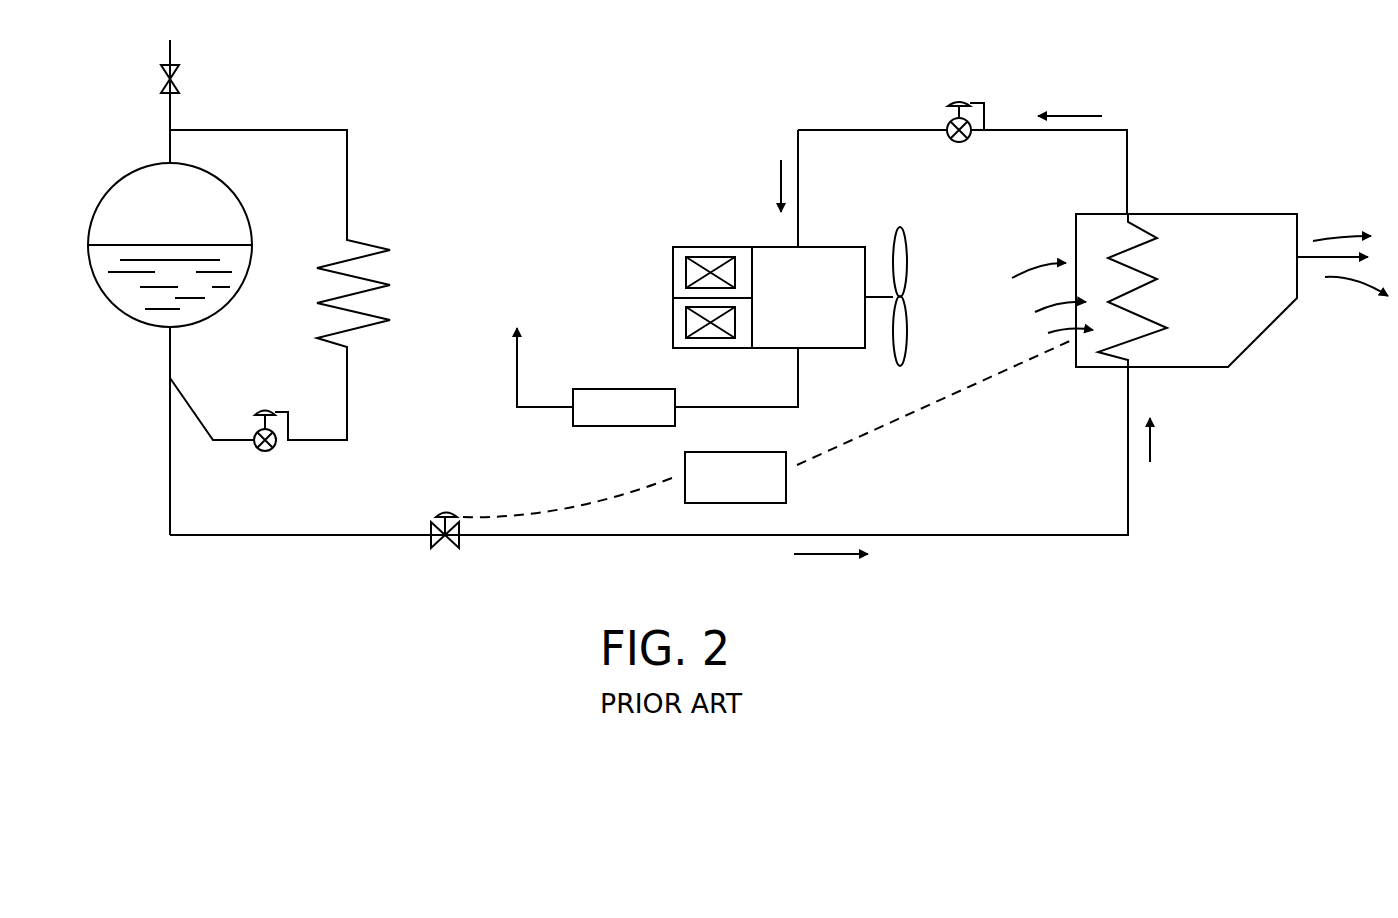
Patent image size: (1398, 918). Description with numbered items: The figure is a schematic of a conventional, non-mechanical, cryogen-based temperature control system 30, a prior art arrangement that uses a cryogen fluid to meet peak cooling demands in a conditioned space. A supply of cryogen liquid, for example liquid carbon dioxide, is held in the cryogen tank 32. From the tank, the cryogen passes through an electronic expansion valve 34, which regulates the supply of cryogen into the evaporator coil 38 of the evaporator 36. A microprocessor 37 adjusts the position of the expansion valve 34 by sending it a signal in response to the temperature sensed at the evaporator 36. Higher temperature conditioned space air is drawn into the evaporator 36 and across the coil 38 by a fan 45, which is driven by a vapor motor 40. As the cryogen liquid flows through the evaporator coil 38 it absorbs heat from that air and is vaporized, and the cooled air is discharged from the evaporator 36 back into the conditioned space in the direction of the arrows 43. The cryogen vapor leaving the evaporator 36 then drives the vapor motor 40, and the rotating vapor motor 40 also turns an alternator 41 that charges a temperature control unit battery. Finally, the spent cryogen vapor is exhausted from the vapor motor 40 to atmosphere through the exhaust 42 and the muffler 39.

The cryogen-based temperature control system 30 is at (565, 103).
The cryogen tank 32 is at (116, 158).
The electronic expansion valve 34 is at (445, 550).
The evaporator 36 is at (1274, 351).
The microprocessor 37 is at (778, 490).
The evaporator coil 38 is at (1148, 232).
The muffler 39 is at (625, 400).
The vapor motor 40 is at (697, 225).
The alternator 41 is at (680, 300).
The exhaust 42 is at (797, 355).
The arrows indicating discharged air direction 43 is at (1345, 237).
The fan 45 is at (907, 252).